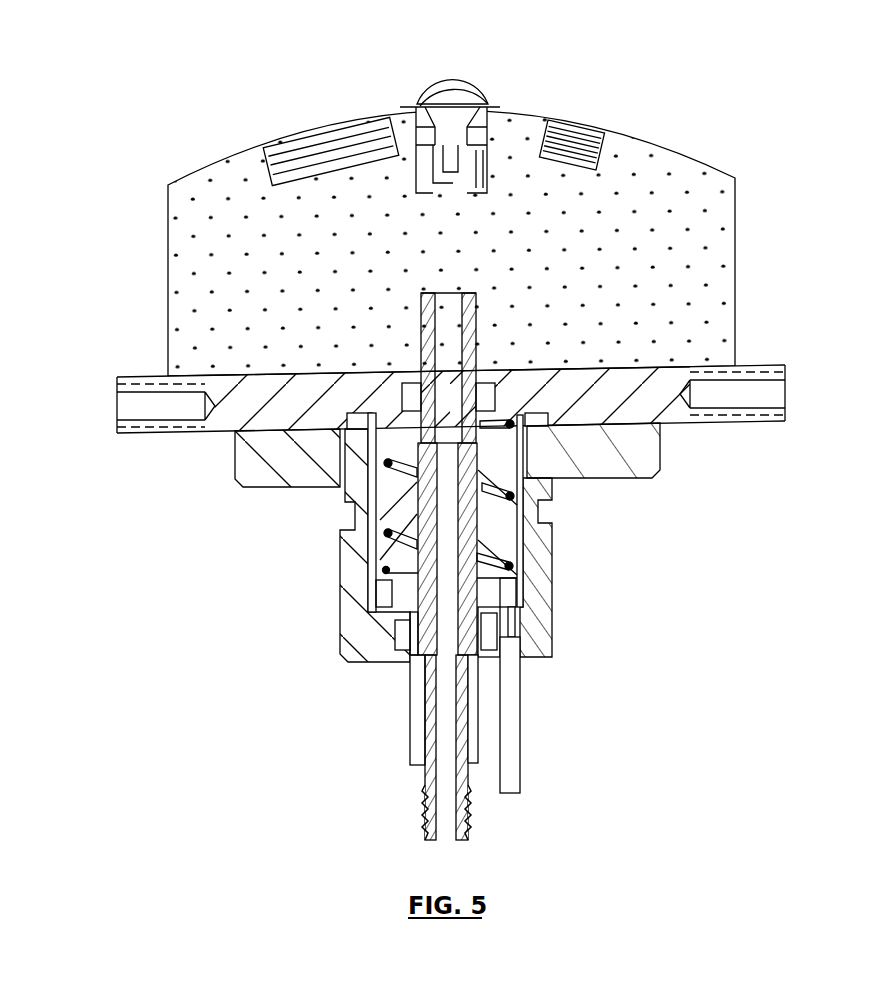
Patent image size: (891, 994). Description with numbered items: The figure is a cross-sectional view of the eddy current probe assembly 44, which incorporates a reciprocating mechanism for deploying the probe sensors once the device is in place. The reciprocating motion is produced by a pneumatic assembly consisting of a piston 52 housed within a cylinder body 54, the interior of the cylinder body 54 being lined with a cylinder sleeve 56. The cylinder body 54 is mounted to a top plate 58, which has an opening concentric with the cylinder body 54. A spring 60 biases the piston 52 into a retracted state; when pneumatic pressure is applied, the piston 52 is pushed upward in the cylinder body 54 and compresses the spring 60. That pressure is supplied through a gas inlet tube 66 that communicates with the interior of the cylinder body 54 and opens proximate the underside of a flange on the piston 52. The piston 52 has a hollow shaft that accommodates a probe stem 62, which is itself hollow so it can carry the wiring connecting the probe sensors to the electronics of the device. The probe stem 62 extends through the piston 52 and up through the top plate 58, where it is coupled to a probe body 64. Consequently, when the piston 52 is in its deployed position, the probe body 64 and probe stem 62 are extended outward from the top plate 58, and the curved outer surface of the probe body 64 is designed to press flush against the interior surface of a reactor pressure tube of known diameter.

The eddy current probe assembly 44 is at (788, 87).
The piston 52 is at (408, 598).
The cylinder body 54 is at (352, 627).
The cylinder sleeve 56 is at (384, 502).
The top plate 58 is at (215, 420).
The spring 60 is at (500, 484).
The probe stem 62 is at (500, 535).
The probe body 64 is at (722, 250).
The gas inlet tube 66 is at (522, 735).